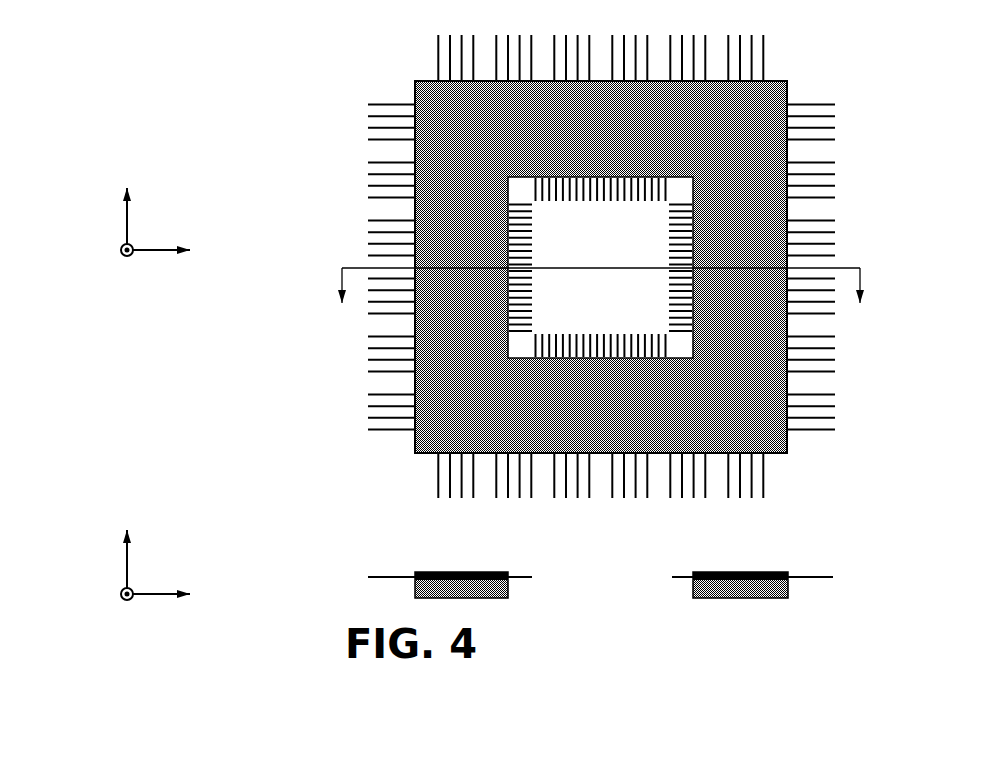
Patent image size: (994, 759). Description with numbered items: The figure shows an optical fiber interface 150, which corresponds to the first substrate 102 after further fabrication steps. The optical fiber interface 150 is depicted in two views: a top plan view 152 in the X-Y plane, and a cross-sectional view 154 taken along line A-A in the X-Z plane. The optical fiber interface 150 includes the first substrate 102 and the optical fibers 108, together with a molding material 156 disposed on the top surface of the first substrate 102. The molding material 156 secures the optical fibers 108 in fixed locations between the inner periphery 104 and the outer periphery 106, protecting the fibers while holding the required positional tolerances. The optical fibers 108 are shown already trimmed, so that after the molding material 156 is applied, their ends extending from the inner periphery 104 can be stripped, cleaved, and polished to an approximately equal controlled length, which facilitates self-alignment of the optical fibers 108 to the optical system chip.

The first substrate 102 is at (500, 598).
The inner periphery 104 is at (696, 181).
The outer periphery 106 is at (787, 376).
The optical fibers 108 is at (424, 47).
The optical fiber interface 150 is at (125, 50).
The top plan view 152 is at (290, 133).
The cross-sectional view 154 is at (338, 578).
The molding material 156 is at (620, 146).